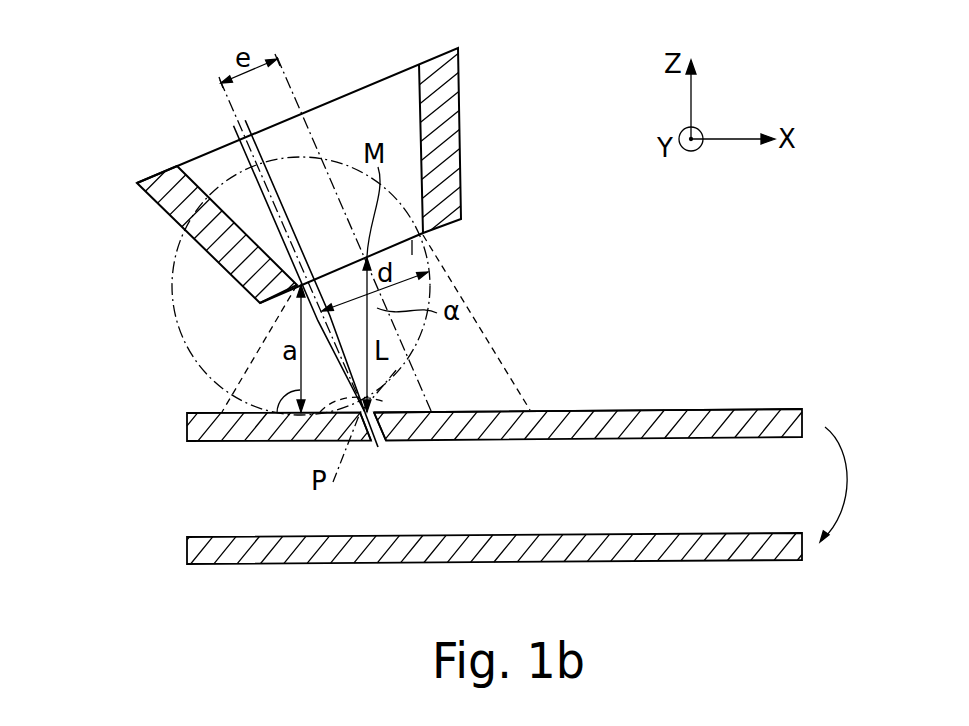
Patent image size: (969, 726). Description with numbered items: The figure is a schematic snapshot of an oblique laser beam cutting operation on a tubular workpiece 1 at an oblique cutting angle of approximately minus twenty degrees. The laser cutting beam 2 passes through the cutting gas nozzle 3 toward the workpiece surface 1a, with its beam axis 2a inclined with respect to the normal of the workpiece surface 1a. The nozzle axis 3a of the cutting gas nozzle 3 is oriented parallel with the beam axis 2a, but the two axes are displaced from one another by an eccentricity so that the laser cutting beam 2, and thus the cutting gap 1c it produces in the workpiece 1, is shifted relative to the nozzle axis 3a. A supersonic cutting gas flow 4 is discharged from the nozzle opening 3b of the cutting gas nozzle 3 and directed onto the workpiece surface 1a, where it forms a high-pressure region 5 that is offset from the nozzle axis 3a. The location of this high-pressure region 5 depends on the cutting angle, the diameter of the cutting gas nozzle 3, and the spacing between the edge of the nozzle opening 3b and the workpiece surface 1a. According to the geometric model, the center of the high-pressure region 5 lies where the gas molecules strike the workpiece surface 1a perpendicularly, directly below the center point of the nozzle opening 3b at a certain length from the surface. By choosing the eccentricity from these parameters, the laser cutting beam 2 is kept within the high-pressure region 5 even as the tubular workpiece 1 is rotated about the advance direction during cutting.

The tubular workpiece 1 is at (181, 455).
The workpiece surface 1a is at (645, 410).
The cutting gap 1c is at (380, 447).
The laser cutting beam 2 is at (245, 157).
The beam axis 2a is at (230, 104).
The cutting gas nozzle 3 is at (460, 62).
The nozzle axis 3a is at (300, 88).
The nozzle opening 3b is at (425, 247).
The supersonic cutting gas flow 4 is at (260, 350).
The high-pressure region 5 is at (385, 402).